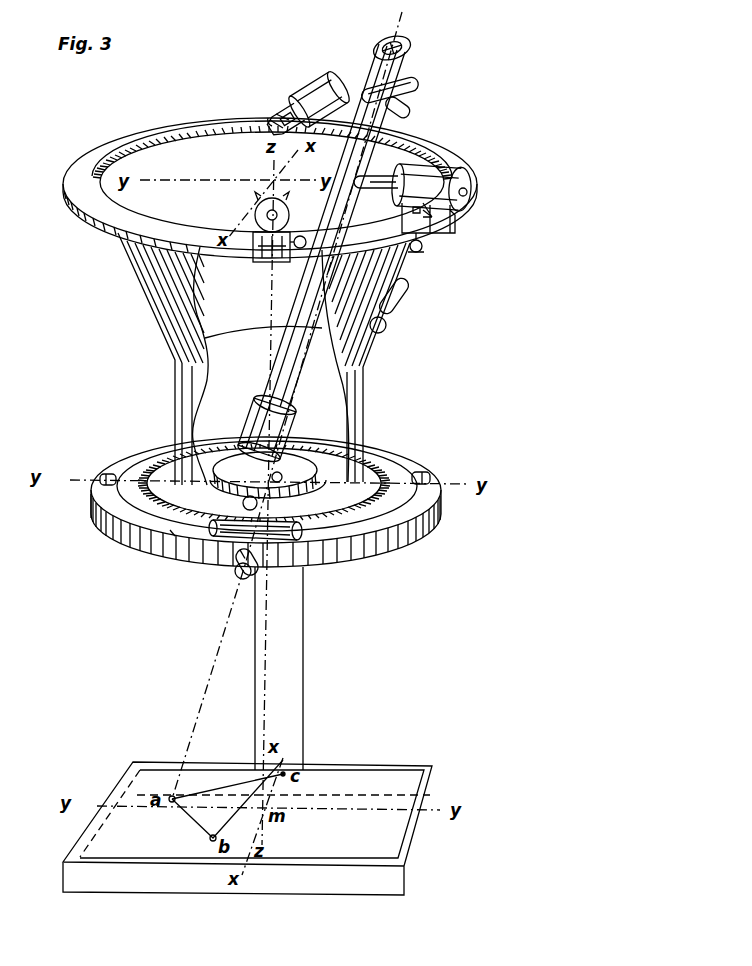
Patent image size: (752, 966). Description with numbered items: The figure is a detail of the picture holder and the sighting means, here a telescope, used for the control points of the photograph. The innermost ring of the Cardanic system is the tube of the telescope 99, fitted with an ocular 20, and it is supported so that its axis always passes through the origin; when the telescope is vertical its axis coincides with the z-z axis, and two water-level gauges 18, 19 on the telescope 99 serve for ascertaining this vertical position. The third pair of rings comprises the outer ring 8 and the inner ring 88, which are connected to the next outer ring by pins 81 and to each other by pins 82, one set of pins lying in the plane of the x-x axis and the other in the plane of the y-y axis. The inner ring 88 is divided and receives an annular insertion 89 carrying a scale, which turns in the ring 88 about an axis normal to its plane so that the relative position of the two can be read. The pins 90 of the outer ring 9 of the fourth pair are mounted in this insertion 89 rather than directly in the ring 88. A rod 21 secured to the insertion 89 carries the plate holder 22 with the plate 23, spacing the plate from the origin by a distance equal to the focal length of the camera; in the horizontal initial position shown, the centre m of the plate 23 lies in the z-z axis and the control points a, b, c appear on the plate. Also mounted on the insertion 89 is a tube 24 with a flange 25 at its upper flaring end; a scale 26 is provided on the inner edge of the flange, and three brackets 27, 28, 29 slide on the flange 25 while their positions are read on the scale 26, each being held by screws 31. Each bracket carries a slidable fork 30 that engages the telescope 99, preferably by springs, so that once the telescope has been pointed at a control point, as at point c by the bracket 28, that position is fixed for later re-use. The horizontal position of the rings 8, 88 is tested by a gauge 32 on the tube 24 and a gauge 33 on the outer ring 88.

The ring 8 is at (420, 500).
The ring 9 is at (197, 513).
The water-level gauge 18 is at (418, 84).
The water-level gauge 19 is at (412, 113).
The ocular 20 is at (411, 48).
The rod 21 is at (290, 677).
The plate holder 22 is at (405, 768).
The plate 23 is at (333, 781).
The tube 24 is at (138, 266).
The flange 25 is at (80, 181).
The scale 26 is at (142, 152).
The bracket 27 is at (310, 92).
The bracket 28 is at (440, 180).
The bracket 29 is at (255, 215).
The fork 30 is at (285, 118).
The screw 31 is at (270, 262).
The gauge 32 is at (390, 322).
The gauge 33 is at (227, 538).
The pin 81 is at (243, 571).
The pin 82 is at (108, 472).
The ring 88 is at (373, 510).
The annular insertion 89 is at (378, 472).
The pin 90 is at (170, 533).
The telescope 99 is at (263, 395).